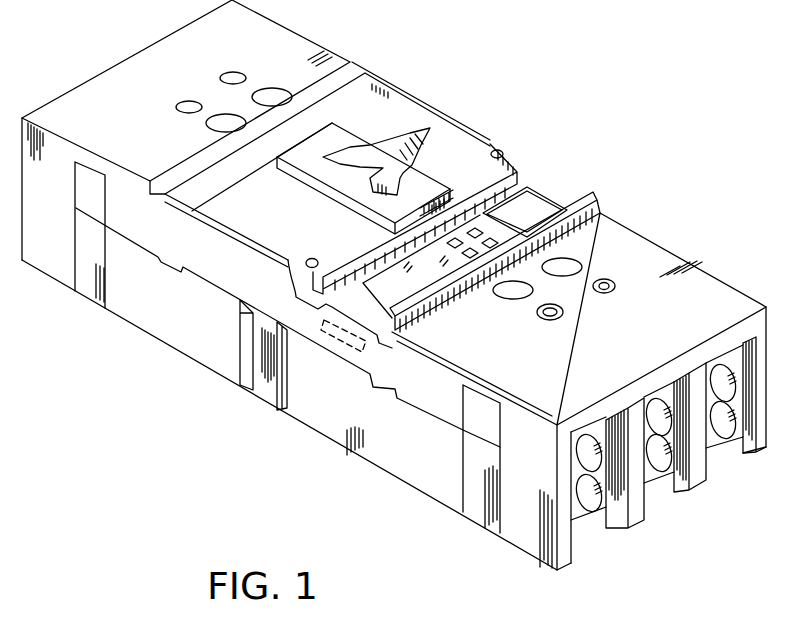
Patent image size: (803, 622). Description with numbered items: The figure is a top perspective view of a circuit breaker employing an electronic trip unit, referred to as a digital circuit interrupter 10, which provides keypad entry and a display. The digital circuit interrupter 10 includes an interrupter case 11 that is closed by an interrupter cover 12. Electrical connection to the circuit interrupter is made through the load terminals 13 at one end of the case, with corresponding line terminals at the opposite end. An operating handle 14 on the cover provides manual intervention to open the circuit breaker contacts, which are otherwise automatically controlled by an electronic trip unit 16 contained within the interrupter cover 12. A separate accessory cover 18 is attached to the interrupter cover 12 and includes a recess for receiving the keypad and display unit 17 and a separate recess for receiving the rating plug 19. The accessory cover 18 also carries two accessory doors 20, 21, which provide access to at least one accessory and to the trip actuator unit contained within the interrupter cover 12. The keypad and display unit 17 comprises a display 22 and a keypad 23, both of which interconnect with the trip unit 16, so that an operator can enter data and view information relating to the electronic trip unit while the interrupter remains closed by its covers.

The digital circuit interrupter 10 is at (394, 285).
The interrupter case 11 is at (163, 342).
The interrupter cover 12 is at (203, 279).
The load terminals 13 is at (666, 480).
The operating handle 14 is at (433, 136).
The electronic trip unit 16 is at (355, 360).
The keypad and display unit 17 is at (463, 219).
The accessory cover 18 is at (180, 207).
The rating plug 19 is at (552, 197).
The accessory door 20 is at (272, 206).
The accessory door 21 is at (400, 115).
The display 22 is at (421, 266).
The keypad 23 is at (481, 258).